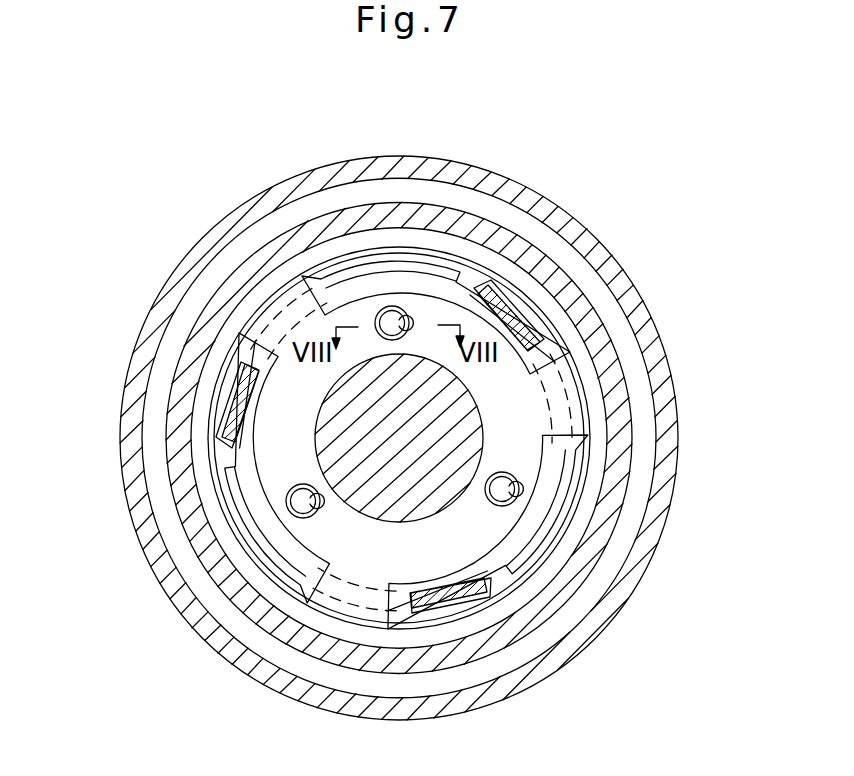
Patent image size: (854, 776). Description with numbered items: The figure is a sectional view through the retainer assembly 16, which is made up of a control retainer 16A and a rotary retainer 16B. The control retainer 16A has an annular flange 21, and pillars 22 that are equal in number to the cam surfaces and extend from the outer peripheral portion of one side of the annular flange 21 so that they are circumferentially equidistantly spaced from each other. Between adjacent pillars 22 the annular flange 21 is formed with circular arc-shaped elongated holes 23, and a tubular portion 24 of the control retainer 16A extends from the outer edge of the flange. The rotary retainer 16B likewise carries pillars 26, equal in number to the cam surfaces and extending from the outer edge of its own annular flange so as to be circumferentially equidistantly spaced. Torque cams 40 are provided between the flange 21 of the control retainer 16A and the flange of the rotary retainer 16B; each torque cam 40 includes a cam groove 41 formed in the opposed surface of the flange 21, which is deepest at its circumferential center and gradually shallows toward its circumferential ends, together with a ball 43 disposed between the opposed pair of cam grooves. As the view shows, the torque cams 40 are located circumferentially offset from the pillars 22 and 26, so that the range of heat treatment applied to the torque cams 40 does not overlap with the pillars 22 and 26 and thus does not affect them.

The retainer assembly 16 is at (307, 218).
The control retainer 16A is at (350, 209).
The rotary retainer 16B is at (579, 262).
The annular flange 21 is at (272, 426).
The pillars 22 is at (552, 392).
The circular arc-shaped elongated holes 23 is at (565, 448).
The tubular portion 24 is at (387, 218).
The pillars 26 is at (236, 383).
The torque cams 40 is at (520, 498).
The cam groove 41 is at (424, 300).
The ball 43 is at (520, 506).